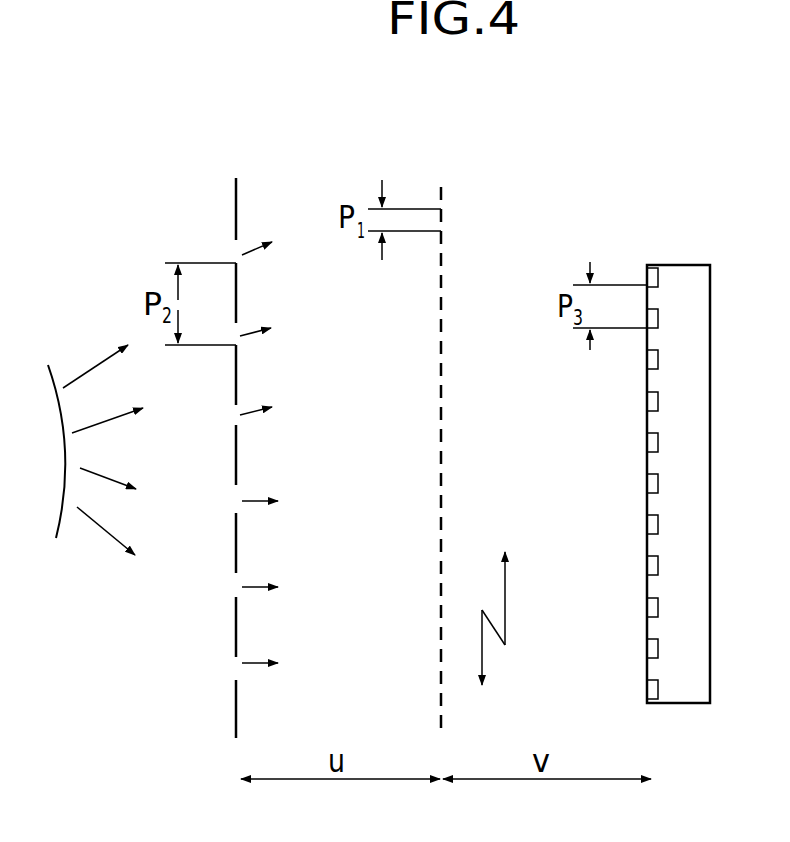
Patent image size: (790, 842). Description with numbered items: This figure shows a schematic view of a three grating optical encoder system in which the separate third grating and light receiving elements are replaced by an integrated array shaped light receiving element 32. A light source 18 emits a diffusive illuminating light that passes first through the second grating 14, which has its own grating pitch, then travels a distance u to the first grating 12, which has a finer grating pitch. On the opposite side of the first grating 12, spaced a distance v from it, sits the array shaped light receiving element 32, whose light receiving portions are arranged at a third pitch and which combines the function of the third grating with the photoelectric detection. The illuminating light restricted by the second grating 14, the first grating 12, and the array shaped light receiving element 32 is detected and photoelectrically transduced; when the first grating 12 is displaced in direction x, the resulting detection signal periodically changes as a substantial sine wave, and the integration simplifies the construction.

The first grating 12 is at (441, 187).
The second grating 14 is at (236, 178).
The light source 18 is at (63, 522).
The array shaped light receiving element 32 is at (710, 423).